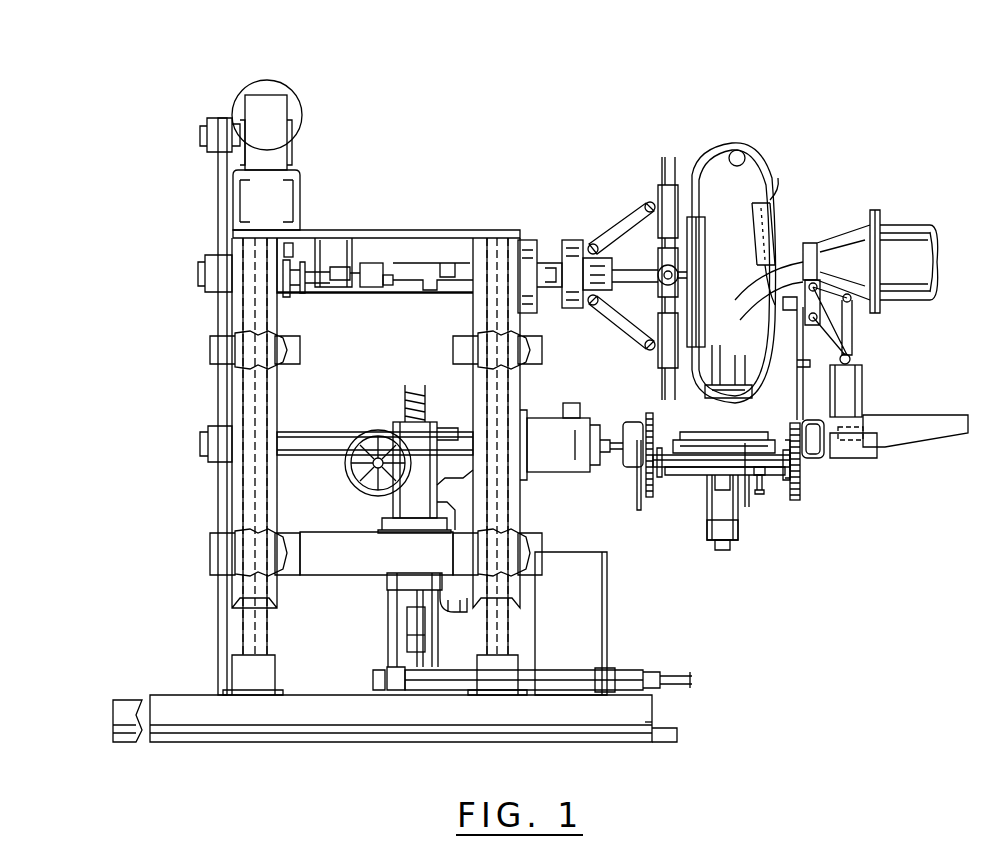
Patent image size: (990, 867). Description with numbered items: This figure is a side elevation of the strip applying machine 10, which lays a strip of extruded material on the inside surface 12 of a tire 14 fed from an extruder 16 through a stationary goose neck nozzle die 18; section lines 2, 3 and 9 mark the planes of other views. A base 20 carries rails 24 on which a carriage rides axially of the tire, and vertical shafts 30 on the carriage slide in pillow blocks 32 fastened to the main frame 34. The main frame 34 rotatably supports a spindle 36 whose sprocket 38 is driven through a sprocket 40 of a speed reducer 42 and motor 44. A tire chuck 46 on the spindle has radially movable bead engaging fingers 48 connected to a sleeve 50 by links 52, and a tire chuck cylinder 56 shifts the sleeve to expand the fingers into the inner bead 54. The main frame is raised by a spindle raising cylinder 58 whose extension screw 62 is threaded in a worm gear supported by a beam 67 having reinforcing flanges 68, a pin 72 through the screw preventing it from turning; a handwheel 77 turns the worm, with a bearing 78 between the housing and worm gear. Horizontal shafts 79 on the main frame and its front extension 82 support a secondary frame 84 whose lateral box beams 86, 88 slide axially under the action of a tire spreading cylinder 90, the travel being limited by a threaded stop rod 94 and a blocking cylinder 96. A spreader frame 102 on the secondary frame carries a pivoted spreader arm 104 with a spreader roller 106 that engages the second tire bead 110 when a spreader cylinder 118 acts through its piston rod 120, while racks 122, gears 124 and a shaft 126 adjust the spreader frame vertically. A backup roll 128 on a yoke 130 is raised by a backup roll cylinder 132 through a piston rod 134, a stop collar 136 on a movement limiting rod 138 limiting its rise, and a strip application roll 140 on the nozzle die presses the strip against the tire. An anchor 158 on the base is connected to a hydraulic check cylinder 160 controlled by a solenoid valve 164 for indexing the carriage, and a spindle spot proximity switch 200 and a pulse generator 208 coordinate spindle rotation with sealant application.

The section line 2- 2 is at (905, 790).
The section line 3- 3 is at (118, 795).
The section line 9- 9 is at (556, 484).
The strip applying machine 10 is at (200, 165).
The inside surface 12 is at (745, 158).
The tire 14 is at (708, 158).
The extruder 16 is at (915, 228).
The goose neck nozzle die 18 is at (768, 270).
The base 20 is at (507, 735).
The rail 24 is at (616, 715).
The vertical shaft 30 is at (250, 485).
The pillow block 32 is at (240, 345).
The main frame 34 is at (237, 388).
The spindle 36 is at (405, 265).
The sprocket 38 is at (218, 246).
The sprocket 40 is at (218, 128).
The speed reducer 42 is at (277, 143).
The motor 44 is at (295, 110).
The tire chuck 46 is at (628, 225).
The bead engaging finger 48 is at (658, 205).
The sleeve 50 is at (570, 248).
The link 52 is at (620, 240).
The inner bead 54 is at (700, 165).
The tire chuck cylinder 56 is at (455, 240).
The spindle raising cylinder 58 is at (410, 640).
The extension screw 62 is at (408, 418).
The beam 67 is at (440, 432).
The reinforcing flange 68 is at (425, 418).
The pin 72 is at (395, 427).
The handwheel 77 is at (348, 465).
The bearing 78 is at (875, 447).
The horizontal shaft 79 is at (213, 445).
The main frame front extension 82 is at (565, 462).
The secondary frame 84 is at (812, 462).
The lateral box beam 86 is at (635, 425).
The lateral box beam 88 is at (798, 468).
The tire spreading cylinder 90 is at (437, 475).
The threaded stop rod 94 is at (605, 450).
The blocking cylinder 96 is at (600, 405).
The spreader frame 102 is at (800, 375).
The spreader arm 104 is at (748, 335).
The spreader roller 106 is at (830, 262).
The second tire bead 110 is at (775, 200).
The spreader cylinder 118 is at (855, 393).
The piston rod 120 is at (850, 332).
The rack 122 is at (760, 425).
The gear 124 is at (645, 490).
The shaft 126 is at (680, 472).
The backup roll 128 is at (747, 500).
The yoke 130 is at (720, 462).
The backup roll cylinder 132 is at (735, 542).
The piston rod 134 is at (727, 465).
The stop collar 136 is at (763, 482).
The movement limiting rod 138 is at (760, 472).
The strip application roll 140 is at (690, 380).
The anchor 158 is at (660, 725).
The hydraulic check cylinder 160 is at (595, 675).
The solenoid valve 164 is at (422, 630).
The spindle spot proximity switch 200 is at (292, 243).
The pulse generator 208 is at (282, 280).